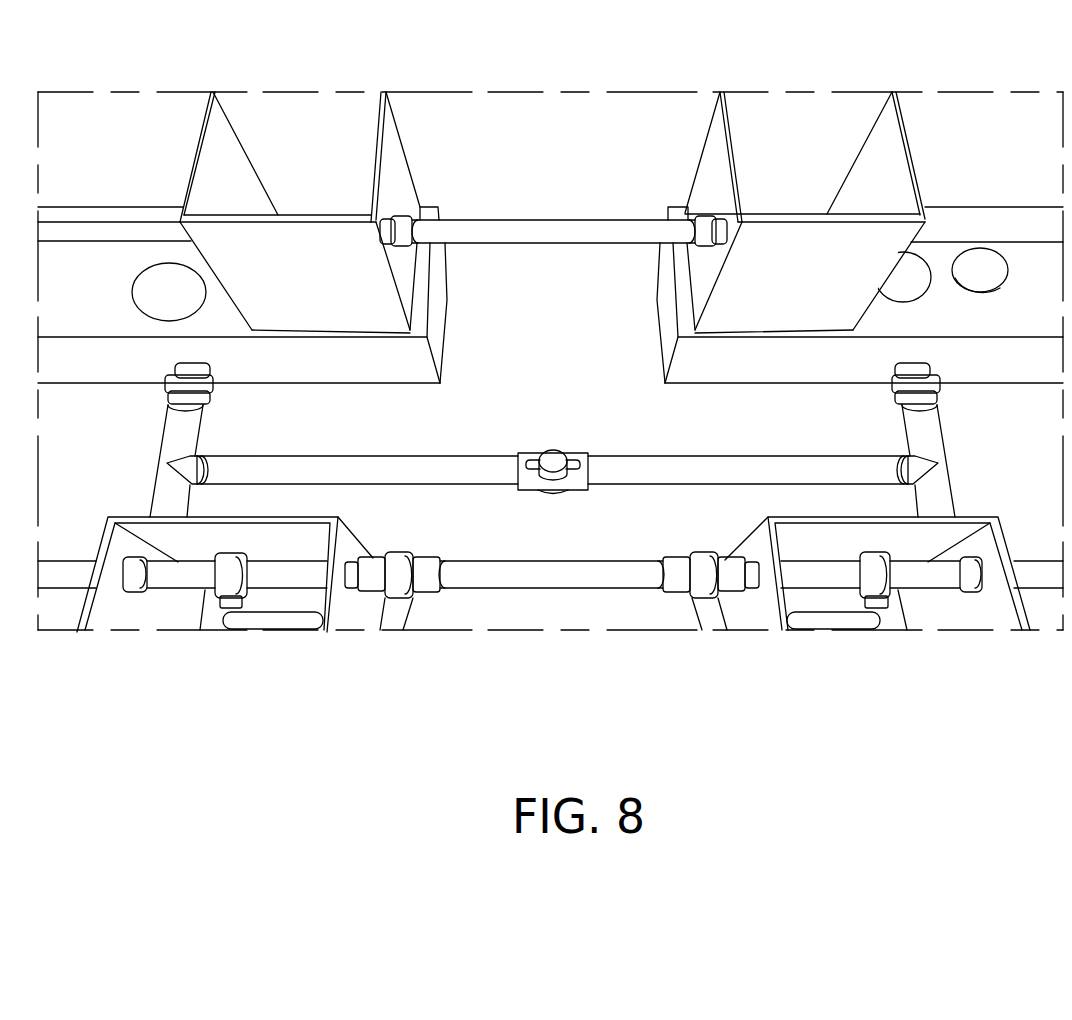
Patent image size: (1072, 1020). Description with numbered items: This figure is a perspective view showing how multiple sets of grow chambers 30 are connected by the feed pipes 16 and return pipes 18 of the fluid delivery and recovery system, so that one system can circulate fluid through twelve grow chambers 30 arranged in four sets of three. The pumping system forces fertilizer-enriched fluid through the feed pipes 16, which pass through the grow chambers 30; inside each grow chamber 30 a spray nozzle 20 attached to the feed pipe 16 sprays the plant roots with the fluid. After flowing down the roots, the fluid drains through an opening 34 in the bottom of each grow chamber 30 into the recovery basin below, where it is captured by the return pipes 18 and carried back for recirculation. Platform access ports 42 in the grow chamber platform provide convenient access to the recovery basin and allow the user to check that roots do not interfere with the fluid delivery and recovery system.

The feed pipe 16 is at (553, 226).
The return pipe 18 is at (930, 428).
The spray nozzle 20 is at (225, 603).
The grow chamber 30 is at (300, 112).
The opening 34 is at (815, 623).
The platform access port 42 is at (917, 270).